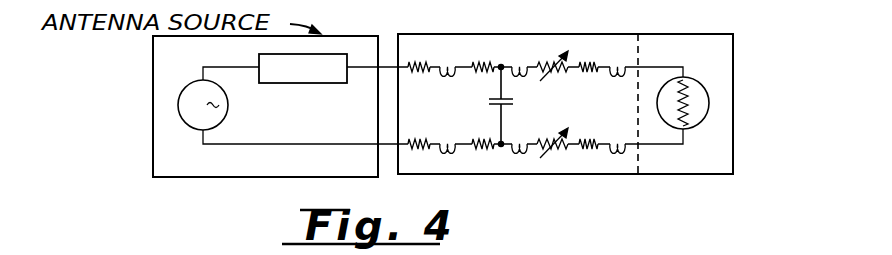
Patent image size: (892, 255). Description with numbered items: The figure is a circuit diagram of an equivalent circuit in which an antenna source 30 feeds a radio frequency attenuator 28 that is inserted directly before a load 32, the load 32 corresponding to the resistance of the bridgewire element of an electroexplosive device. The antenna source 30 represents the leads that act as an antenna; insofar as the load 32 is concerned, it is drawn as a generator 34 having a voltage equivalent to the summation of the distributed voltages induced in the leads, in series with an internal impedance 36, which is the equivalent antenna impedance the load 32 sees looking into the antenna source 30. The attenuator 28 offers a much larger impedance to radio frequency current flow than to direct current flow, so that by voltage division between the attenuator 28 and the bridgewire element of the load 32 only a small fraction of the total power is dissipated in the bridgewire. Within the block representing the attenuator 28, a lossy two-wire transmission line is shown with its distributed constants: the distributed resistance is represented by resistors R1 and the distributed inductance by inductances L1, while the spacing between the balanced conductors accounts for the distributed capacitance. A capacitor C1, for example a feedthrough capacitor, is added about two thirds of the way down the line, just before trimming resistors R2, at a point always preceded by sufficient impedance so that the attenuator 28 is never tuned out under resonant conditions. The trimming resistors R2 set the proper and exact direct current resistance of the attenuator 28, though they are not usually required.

The attenuator 28 is at (505, 34).
The antenna source 30 is at (152, 89).
The load 32 is at (690, 33).
The generator 34 is at (229, 110).
The internal impedance 36 is at (297, 85).
The resistors R1 is at (471, 63).
The trimming resistors R2 is at (546, 74).
The inductances L1 is at (456, 70).
The capacitor C1 is at (496, 101).